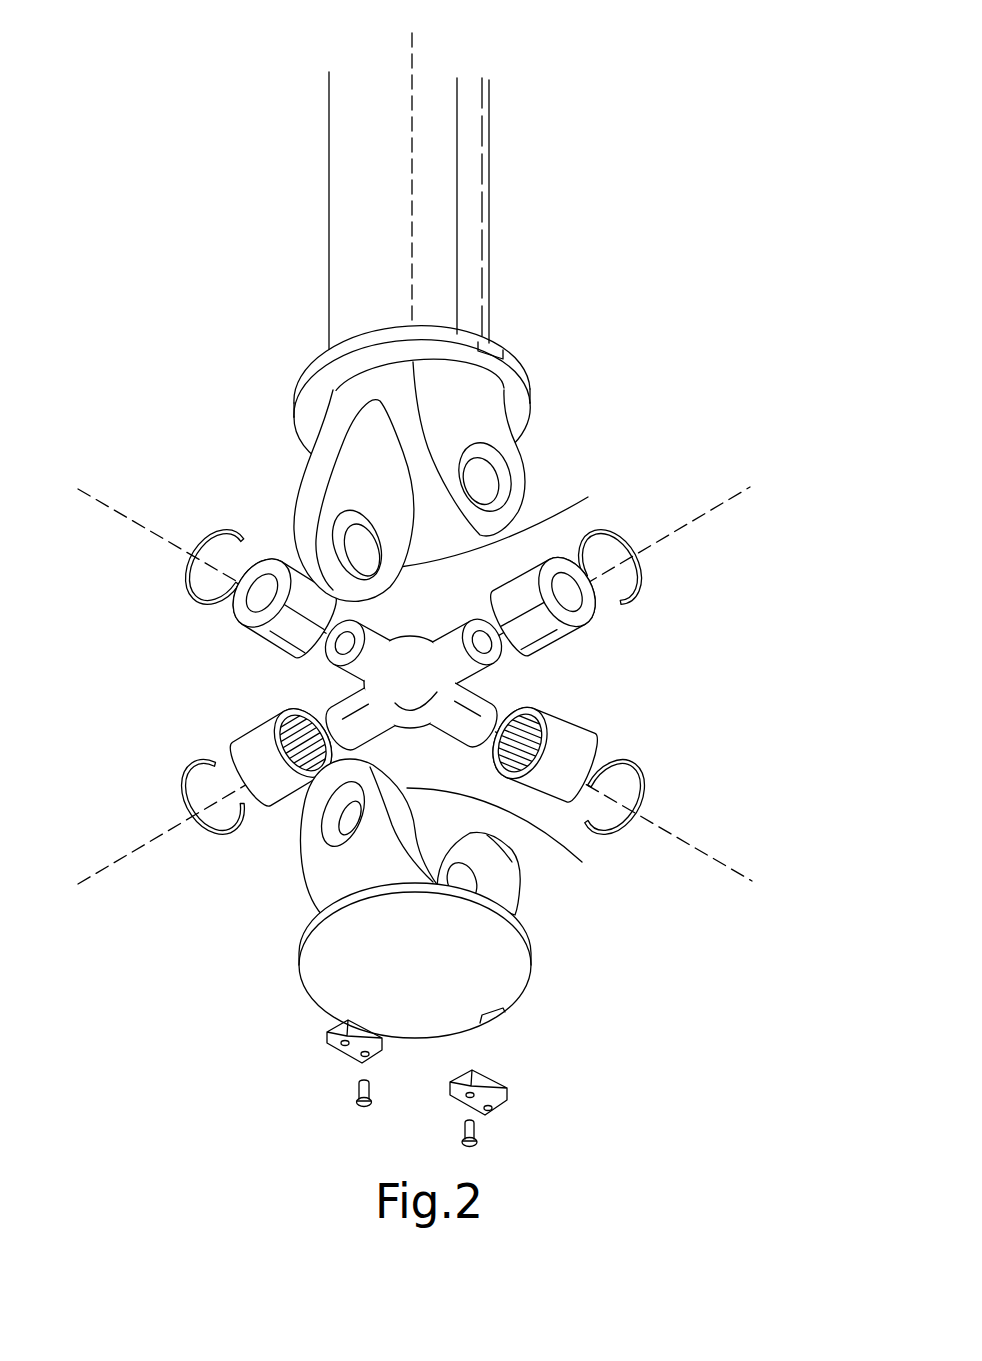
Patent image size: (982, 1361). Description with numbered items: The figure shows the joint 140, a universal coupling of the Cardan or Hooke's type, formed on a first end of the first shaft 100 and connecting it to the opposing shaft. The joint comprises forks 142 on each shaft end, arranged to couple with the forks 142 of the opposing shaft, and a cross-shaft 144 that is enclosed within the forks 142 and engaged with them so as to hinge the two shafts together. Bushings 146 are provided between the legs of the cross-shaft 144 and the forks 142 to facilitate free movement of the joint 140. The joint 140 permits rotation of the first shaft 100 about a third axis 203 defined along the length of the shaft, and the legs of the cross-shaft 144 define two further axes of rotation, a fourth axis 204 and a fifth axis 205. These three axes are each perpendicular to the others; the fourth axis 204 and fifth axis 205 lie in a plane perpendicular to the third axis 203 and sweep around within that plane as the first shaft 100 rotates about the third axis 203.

The first shaft 100 is at (447, 227).
The joint 140 is at (369, 726).
The forks 142 is at (513, 476).
The cross-shaft 144 is at (360, 687).
The bushings 146 is at (247, 752).
The third axis 203 is at (412, 78).
The fourth axis 204 is at (717, 503).
The fifth axis 205 is at (718, 864).